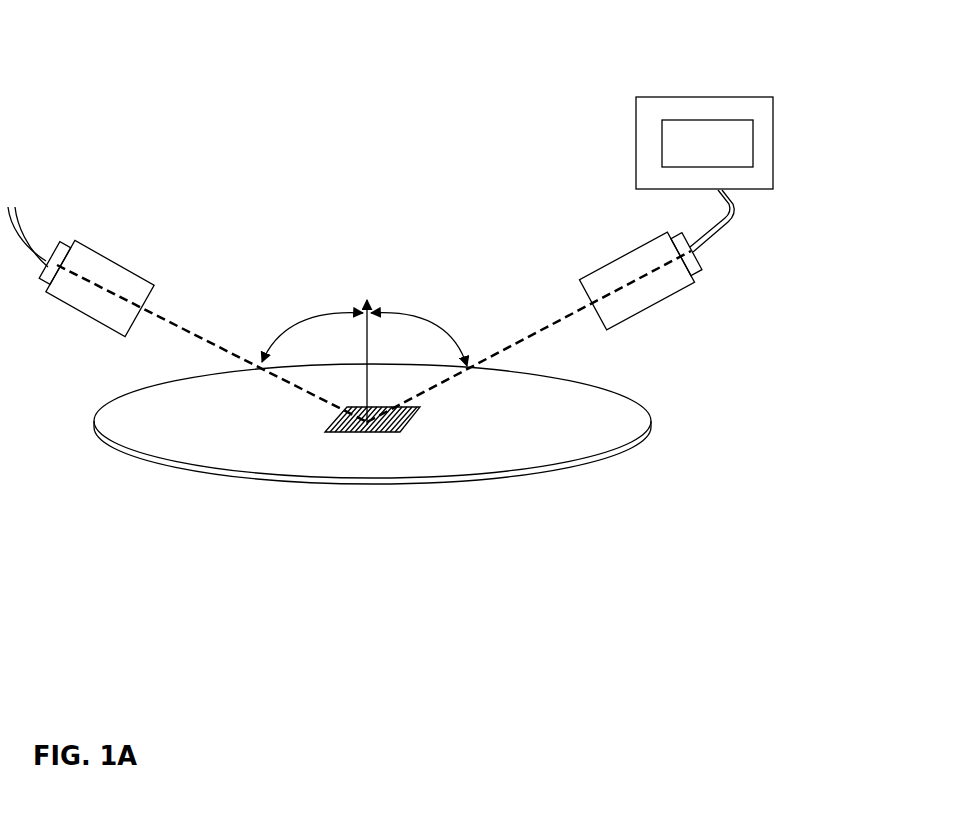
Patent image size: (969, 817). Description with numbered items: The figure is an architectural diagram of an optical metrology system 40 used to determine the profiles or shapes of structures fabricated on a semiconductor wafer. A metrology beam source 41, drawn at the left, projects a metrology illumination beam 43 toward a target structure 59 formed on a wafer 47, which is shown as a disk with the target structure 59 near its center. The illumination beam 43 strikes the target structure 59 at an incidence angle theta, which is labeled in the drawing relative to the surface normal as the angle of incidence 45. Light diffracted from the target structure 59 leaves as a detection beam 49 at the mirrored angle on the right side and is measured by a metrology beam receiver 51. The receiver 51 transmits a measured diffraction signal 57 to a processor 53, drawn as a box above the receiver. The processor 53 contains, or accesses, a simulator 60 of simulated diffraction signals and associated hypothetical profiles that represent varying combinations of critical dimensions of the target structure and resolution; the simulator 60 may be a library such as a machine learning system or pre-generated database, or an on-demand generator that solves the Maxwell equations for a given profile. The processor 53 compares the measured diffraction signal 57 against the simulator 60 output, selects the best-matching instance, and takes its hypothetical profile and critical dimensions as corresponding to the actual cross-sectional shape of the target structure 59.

The optical metrology system 40 is at (378, 80).
The metrology beam source 41 is at (128, 242).
The metrology illumination beam 43 is at (170, 318).
The angle of incidence 45 is at (310, 280).
The wafer 47 is at (140, 390).
The diffracted detection beam 49 is at (540, 285).
The metrology beam receiver 51 is at (640, 341).
The processor 53 is at (710, 97).
The measured diffraction signal 57 is at (717, 226).
The target structure 59 is at (362, 432).
The simulator 60 is at (707, 143).